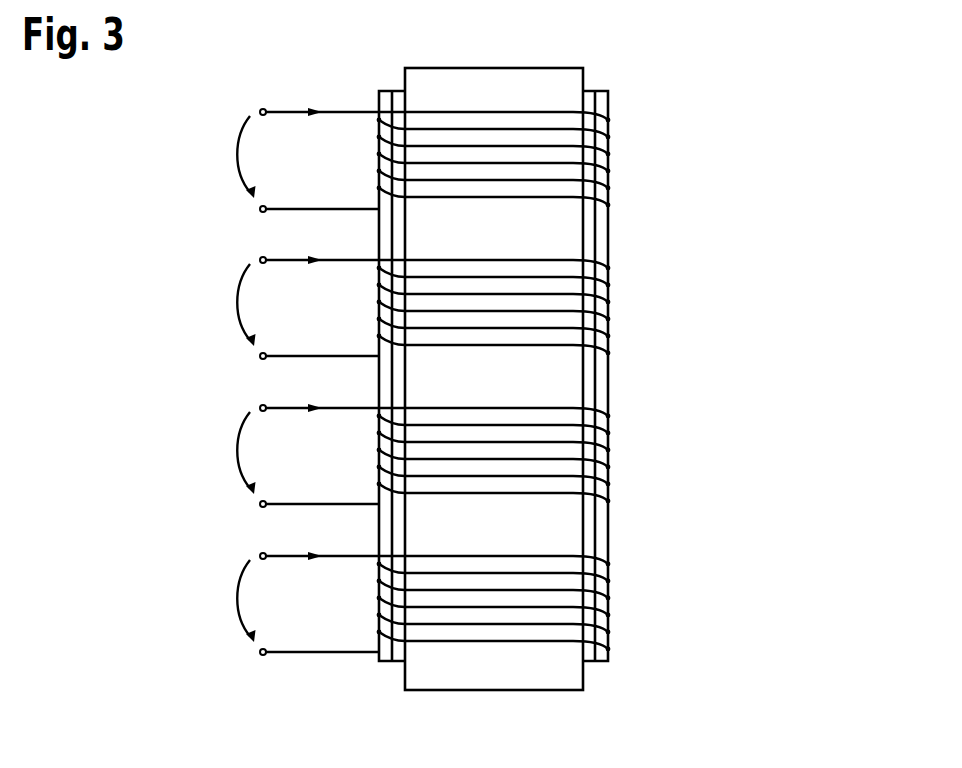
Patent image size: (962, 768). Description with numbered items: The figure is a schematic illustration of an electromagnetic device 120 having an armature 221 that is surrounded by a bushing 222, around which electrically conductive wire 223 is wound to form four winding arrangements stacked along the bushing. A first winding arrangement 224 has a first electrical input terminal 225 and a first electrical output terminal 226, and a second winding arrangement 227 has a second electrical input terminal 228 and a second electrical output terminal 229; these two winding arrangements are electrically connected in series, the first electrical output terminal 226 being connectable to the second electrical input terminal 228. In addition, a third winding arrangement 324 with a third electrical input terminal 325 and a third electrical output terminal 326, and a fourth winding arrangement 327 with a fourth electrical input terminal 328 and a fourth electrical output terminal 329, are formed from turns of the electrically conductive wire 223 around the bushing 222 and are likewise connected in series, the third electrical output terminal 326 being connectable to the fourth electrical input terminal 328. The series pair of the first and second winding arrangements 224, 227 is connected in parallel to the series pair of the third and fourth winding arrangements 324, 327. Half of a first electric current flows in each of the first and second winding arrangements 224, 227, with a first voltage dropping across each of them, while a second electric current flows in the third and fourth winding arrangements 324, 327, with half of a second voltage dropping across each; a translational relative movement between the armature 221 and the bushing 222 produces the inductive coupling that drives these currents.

The electromagnetic device 120 is at (795, 65).
The armature 221 is at (528, 77).
The bushing 222 is at (383, 662).
The electrically conductive wire 223 is at (331, 207).
The first winding arrangement 224 is at (485, 139).
The first electrical input terminal 225 is at (259, 110).
The first electrical output terminal 226 is at (259, 209).
The second winding arrangement 227 is at (485, 287).
The second electrical input terminal 228 is at (259, 258).
The second electrical output terminal 229 is at (259, 356).
The third winding arrangement 324 is at (485, 435).
The third electrical input terminal 325 is at (259, 406).
The third electrical output terminal 326 is at (259, 504).
The fourth winding arrangement 327 is at (485, 583).
The fourth electrical input terminal 328 is at (259, 554).
The fourth electrical output terminal 329 is at (259, 652).